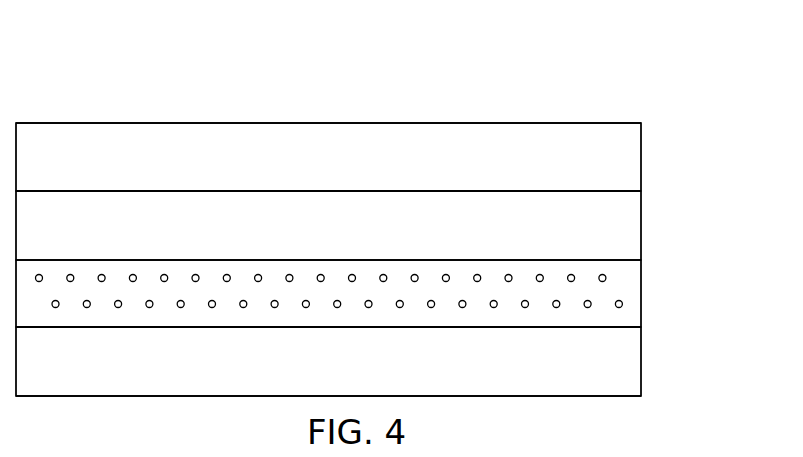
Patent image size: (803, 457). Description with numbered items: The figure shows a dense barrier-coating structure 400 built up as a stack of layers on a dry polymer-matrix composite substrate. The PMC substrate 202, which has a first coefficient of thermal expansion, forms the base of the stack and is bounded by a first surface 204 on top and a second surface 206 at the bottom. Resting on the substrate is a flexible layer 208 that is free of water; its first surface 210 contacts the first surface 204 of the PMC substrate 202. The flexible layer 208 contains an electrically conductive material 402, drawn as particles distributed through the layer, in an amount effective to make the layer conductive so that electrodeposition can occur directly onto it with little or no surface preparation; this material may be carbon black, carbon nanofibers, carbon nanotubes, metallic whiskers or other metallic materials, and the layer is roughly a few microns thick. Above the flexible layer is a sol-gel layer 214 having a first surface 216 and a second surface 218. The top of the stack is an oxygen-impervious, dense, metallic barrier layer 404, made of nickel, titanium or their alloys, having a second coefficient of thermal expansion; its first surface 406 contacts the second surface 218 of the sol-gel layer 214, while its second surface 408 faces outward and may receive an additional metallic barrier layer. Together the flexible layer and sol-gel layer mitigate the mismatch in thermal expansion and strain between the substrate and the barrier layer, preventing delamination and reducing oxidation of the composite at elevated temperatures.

The barrier-coating structure 400 is at (580, 70).
The electrically conductive material 402 is at (146, 306).
The oxygen-impervious, dense, metallic barrier layer 404 is at (473, 150).
The first surface of metallic barrier layer 406 is at (275, 191).
The second surface of metallic barrier layer 408 is at (368, 122).
The PMC substrate 202 is at (628, 367).
The first surface of PMC substrate 204 is at (367, 327).
The second surface of PMC substrate 206 is at (422, 396).
The flexible layer 208 is at (386, 348).
The first surface of flexible layer 210 is at (641, 327).
The sol-gel layer 214 is at (623, 223).
The first surface of sol-gel layer 216 is at (641, 259).
The second surface of sol-gel layer 218 is at (641, 191).